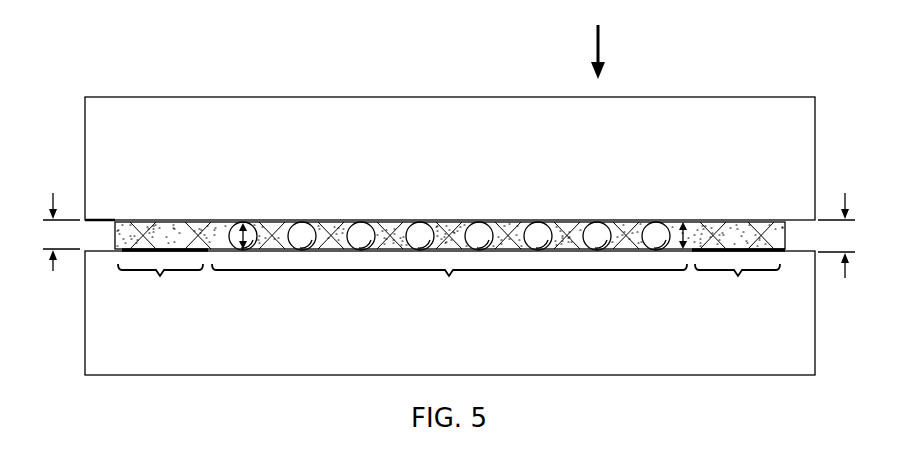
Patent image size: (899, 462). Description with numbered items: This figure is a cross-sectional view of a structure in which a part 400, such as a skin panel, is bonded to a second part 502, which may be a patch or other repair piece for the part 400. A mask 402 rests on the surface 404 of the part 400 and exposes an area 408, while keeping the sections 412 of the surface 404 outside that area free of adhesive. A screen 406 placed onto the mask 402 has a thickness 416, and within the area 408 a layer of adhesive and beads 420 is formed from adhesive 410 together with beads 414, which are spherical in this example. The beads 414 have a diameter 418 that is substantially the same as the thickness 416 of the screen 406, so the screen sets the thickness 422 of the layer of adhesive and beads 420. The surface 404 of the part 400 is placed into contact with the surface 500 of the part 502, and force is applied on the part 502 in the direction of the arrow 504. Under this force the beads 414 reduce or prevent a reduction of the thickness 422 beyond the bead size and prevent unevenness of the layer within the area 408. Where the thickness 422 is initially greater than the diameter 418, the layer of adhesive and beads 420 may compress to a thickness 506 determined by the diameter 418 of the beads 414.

The part 400 is at (146, 377).
The mask 402 is at (116, 253).
The surface 404 is at (820, 252).
The screen 406 is at (169, 221).
The area 408 is at (449, 285).
The adhesive 410 is at (568, 228).
The sections 412 is at (449, 284).
The beads 414 is at (480, 233).
The thickness 416 is at (56, 238).
The diameter 418 is at (240, 223).
The layer of adhesive and beads 420 is at (332, 222).
The thickness 422 is at (691, 231).
The surface 500 is at (99, 224).
The part 502 is at (266, 96).
The arrow 504 is at (604, 40).
The thickness 506 is at (848, 233).